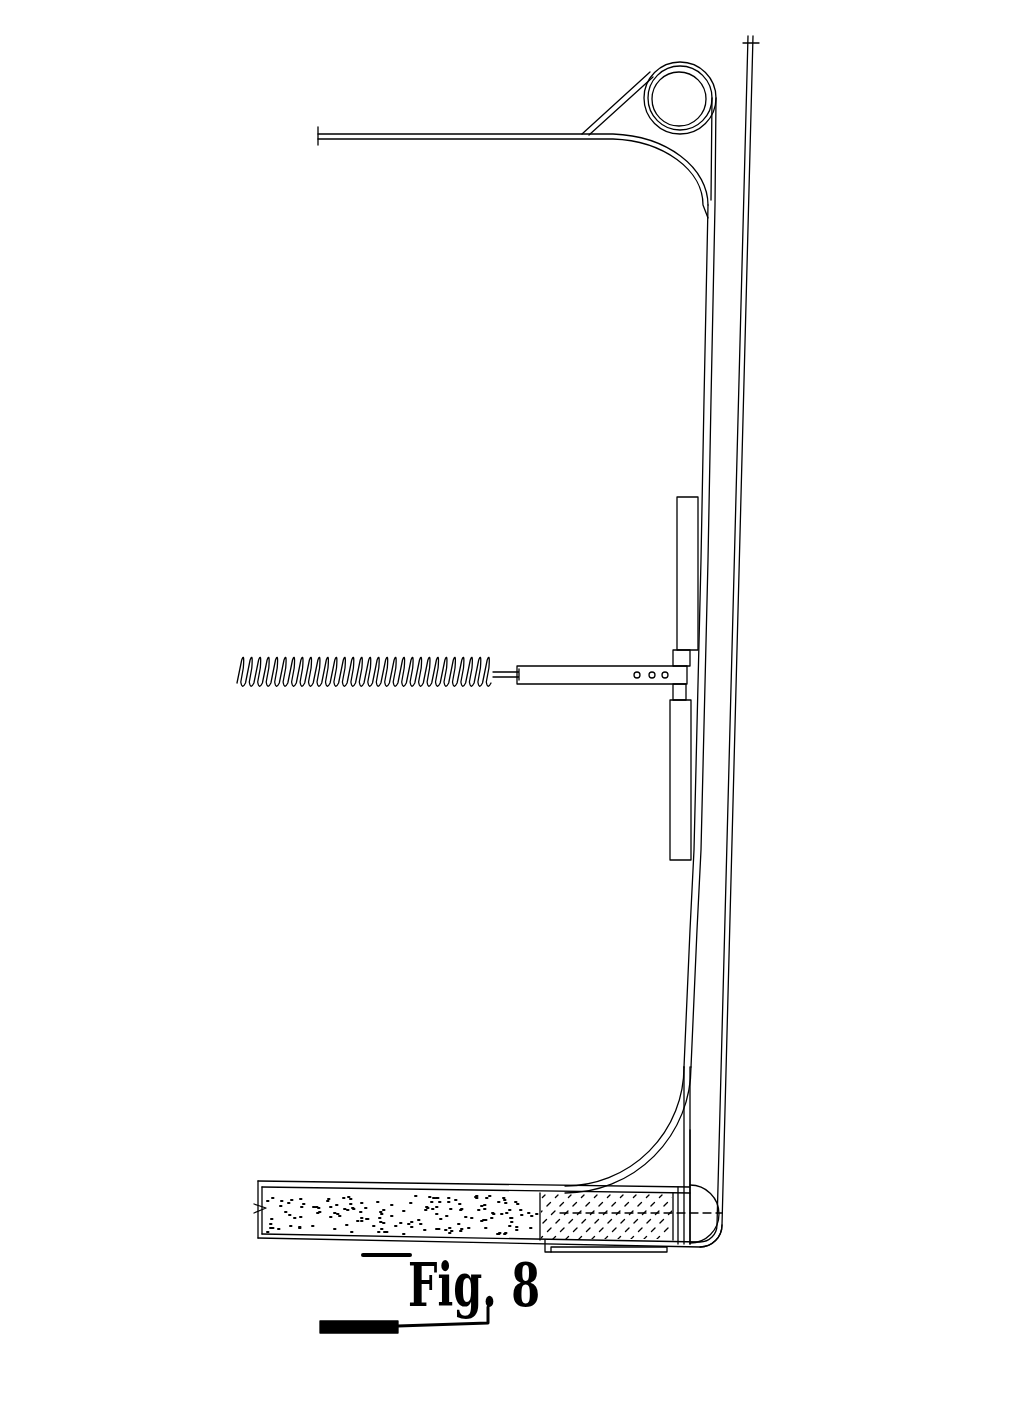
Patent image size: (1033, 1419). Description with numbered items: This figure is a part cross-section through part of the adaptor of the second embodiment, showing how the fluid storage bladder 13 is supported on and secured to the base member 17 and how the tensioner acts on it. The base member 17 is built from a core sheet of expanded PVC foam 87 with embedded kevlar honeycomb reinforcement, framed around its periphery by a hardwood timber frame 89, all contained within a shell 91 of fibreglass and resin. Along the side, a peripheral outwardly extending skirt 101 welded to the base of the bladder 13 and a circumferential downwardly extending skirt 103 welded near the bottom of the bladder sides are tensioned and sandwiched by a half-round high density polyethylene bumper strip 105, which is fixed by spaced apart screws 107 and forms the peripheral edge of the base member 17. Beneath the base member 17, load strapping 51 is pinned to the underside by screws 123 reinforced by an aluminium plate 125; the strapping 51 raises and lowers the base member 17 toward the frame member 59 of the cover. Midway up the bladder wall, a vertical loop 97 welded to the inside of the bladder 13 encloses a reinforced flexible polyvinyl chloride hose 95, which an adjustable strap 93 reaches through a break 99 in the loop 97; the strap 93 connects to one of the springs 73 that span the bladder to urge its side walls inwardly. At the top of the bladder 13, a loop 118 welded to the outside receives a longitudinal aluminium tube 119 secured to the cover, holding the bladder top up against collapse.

The fluid storage bladder 13 is at (418, 137).
The load strapping 51 is at (755, 110).
The loop 118 is at (633, 88).
The aluminium tube 119 is at (647, 117).
The vertical loop 97 is at (682, 550).
The adjustable strap 93 is at (548, 666).
The break 99 is at (660, 656).
The reinforced flexible polyvinyl chloride hose 95 is at (673, 690).
The spring 73 is at (378, 685).
The peripheral outwardly extending skirt 101 is at (622, 1187).
The circumferential downwardly extending skirt 103 is at (688, 1137).
The bumper strip 105 is at (698, 1238).
The screw 107 is at (700, 1228).
The hardwood timber frame 89 is at (580, 1213).
The screw 123 is at (563, 1233).
The aluminium plate 125 is at (583, 1253).
The frame member 59 is at (547, 1252).
The shell 91 is at (257, 1188).
The expanded PVC foam 87 is at (272, 1219).
The base member 17 is at (152, 1253).